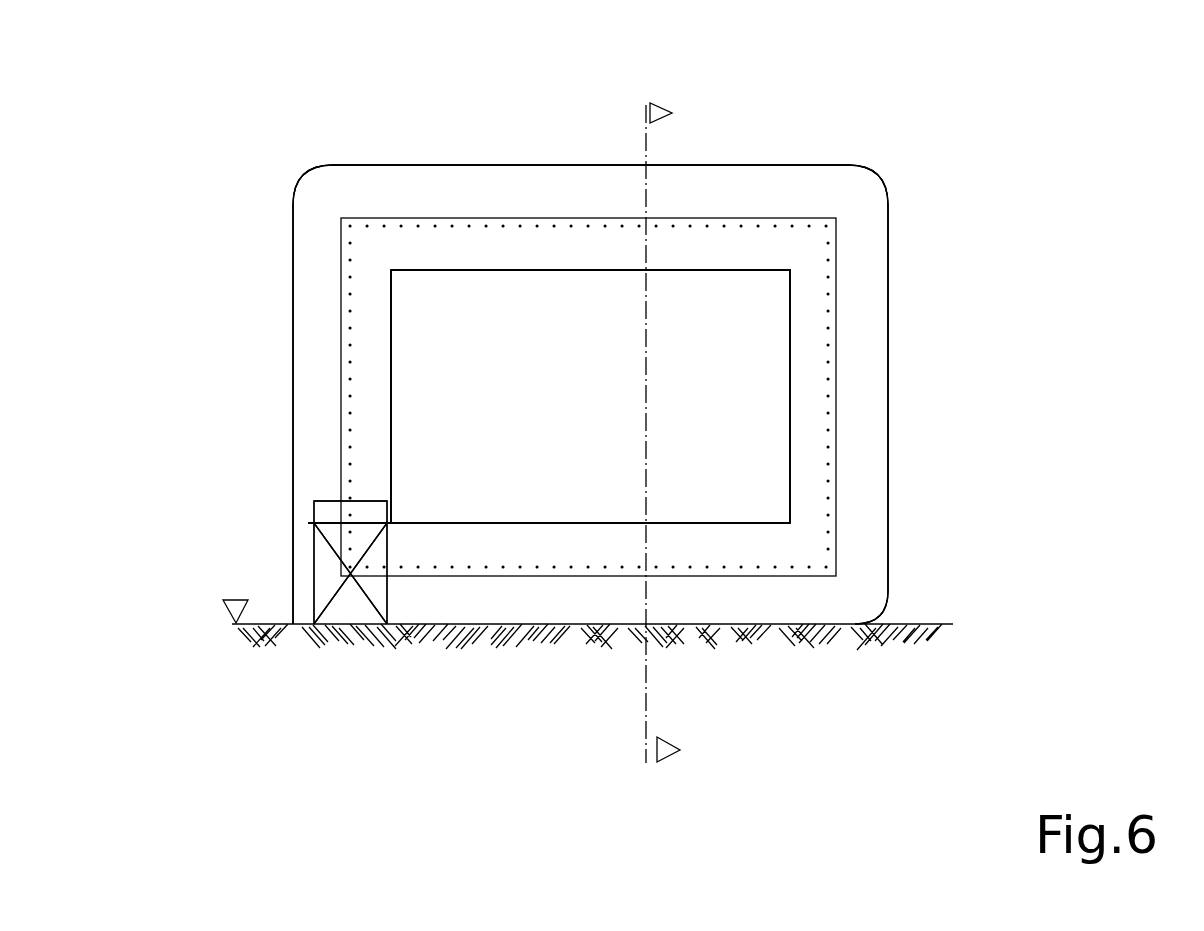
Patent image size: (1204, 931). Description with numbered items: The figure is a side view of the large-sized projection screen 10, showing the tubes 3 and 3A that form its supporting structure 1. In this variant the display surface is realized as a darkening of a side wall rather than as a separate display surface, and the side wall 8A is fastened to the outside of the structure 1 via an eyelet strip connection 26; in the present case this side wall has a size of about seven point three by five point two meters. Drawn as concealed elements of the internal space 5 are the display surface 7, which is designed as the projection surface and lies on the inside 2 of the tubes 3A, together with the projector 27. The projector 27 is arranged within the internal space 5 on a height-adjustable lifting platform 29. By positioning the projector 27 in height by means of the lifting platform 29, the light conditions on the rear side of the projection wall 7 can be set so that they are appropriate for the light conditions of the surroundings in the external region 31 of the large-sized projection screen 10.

The large-sized projection screen 10 is at (897, 73).
The structure 1 is at (305, 177).
The tubes 3 is at (568, 175).
The tubes 3A is at (870, 373).
The eyelet strip connection 26 is at (455, 226).
The internal space 5 is at (543, 396).
The side wall 8A is at (457, 329).
The inside 2 is at (790, 286).
The display surface 7 is at (790, 375).
The projector 27 is at (377, 509).
The height-adjustable lifting platform 29 is at (387, 593).
The external region 31 is at (1128, 111).